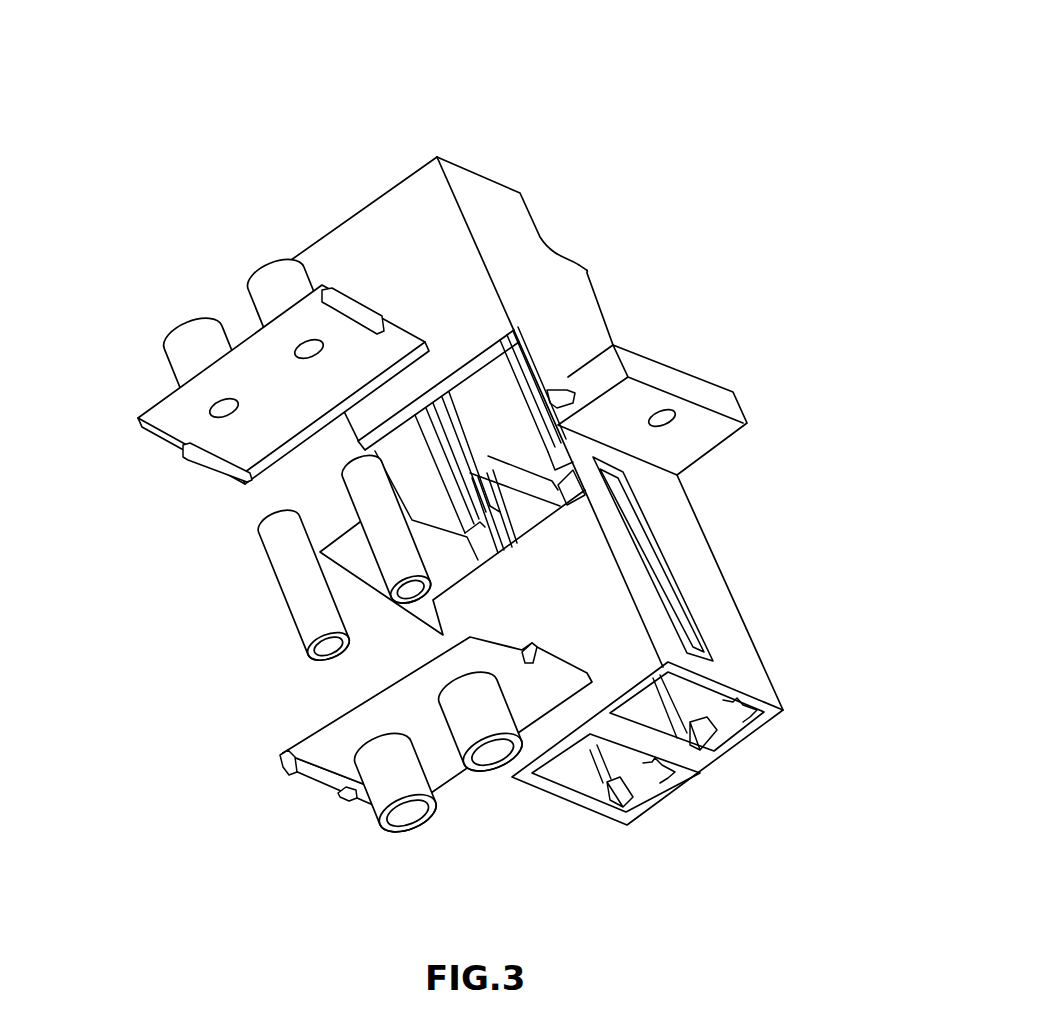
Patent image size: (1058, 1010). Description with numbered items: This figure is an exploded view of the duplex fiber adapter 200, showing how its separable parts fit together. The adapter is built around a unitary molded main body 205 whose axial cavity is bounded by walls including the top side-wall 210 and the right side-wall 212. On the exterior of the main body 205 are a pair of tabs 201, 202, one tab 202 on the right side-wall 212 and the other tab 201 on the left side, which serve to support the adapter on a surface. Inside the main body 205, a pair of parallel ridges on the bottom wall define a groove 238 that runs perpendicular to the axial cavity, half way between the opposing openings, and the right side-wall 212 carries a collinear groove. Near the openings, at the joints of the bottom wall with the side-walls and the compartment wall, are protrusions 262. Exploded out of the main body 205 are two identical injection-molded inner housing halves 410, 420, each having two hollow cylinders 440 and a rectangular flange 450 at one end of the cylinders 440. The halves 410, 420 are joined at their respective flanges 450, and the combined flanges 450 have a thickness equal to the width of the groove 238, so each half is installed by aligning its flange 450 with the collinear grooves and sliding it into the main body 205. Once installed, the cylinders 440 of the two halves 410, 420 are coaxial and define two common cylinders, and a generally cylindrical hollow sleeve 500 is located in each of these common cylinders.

The duplex fiber adapter 200 is at (517, 428).
The main body 205 is at (583, 212).
The groove 238 is at (427, 540).
The tab 202 is at (700, 391).
The top side-wall 210 is at (673, 659).
The right side-wall 212 is at (693, 558).
The protrusions 262 is at (706, 749).
The tab 201 is at (360, 558).
The inner housing half 410 is at (253, 775).
The hollow cylinders 440 is at (278, 280).
The hollow sleeve 500 is at (365, 494).
The inner housing half 420 is at (138, 329).
The flange 450 is at (150, 407).